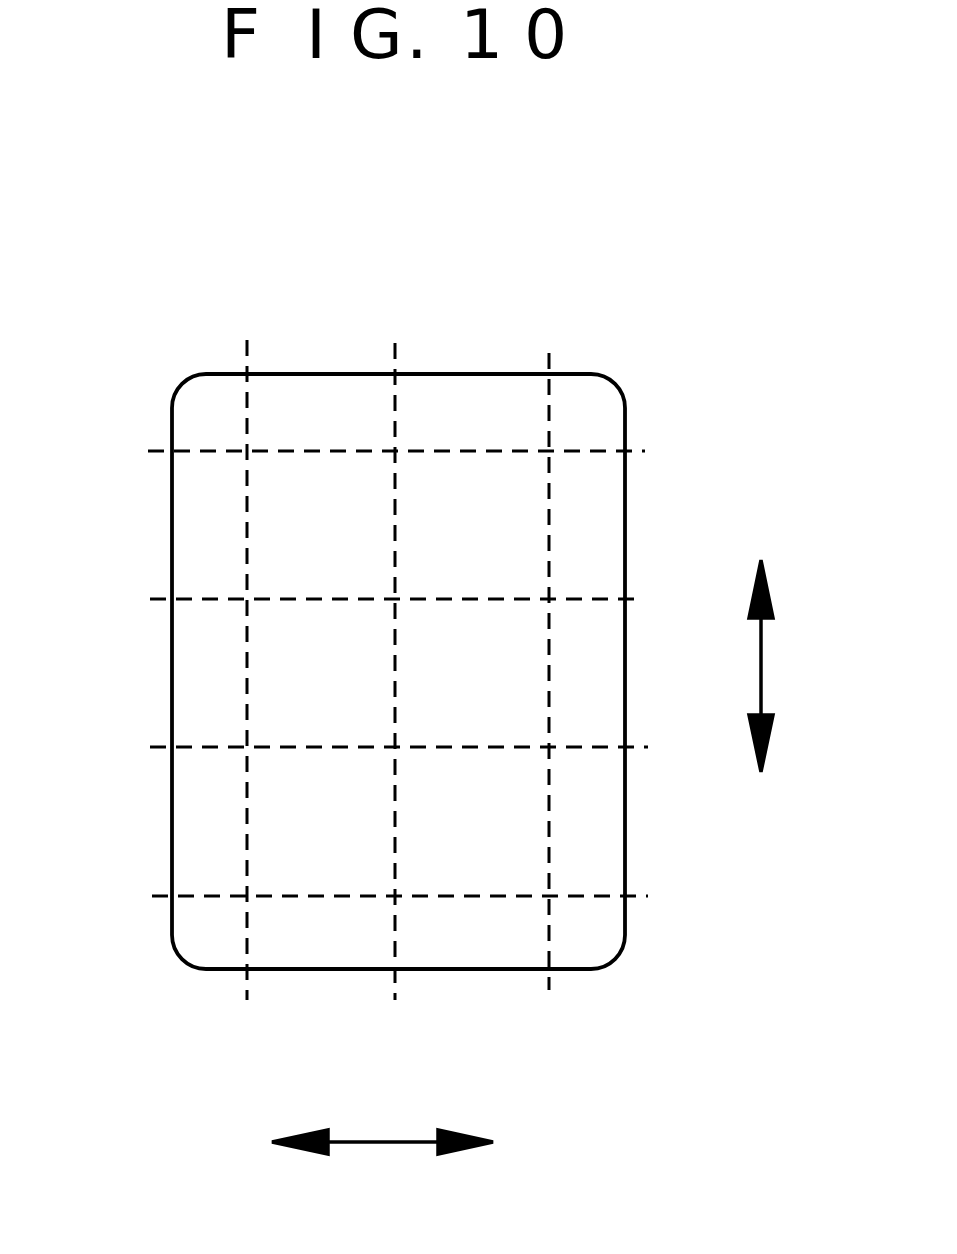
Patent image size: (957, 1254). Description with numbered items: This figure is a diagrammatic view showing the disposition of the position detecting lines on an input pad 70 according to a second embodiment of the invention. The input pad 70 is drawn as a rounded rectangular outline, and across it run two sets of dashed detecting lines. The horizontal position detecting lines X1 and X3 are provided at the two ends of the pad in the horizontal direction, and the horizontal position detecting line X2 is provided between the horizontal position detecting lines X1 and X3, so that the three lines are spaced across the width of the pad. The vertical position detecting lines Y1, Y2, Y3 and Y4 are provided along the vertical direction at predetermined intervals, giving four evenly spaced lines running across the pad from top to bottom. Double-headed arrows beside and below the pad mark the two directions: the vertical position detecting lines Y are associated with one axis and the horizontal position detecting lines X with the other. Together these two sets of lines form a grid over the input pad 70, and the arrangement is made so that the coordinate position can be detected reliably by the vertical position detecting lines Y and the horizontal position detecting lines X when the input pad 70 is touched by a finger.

The input pad 70 is at (592, 400).
The horizontal position detecting line X1 is at (246, 717).
The horizontal position detecting line X2 is at (389, 719).
The horizontal position detecting line X3 is at (538, 724).
The vertical position detecting line Y1 is at (358, 916).
The vertical position detecting line Y2 is at (358, 768).
The vertical position detecting line Y3 is at (356, 617).
The vertical position detecting line Y4 is at (357, 457).
The horizontal position detecting lines X is at (417, 1142).
The vertical position detecting lines Y is at (761, 637).